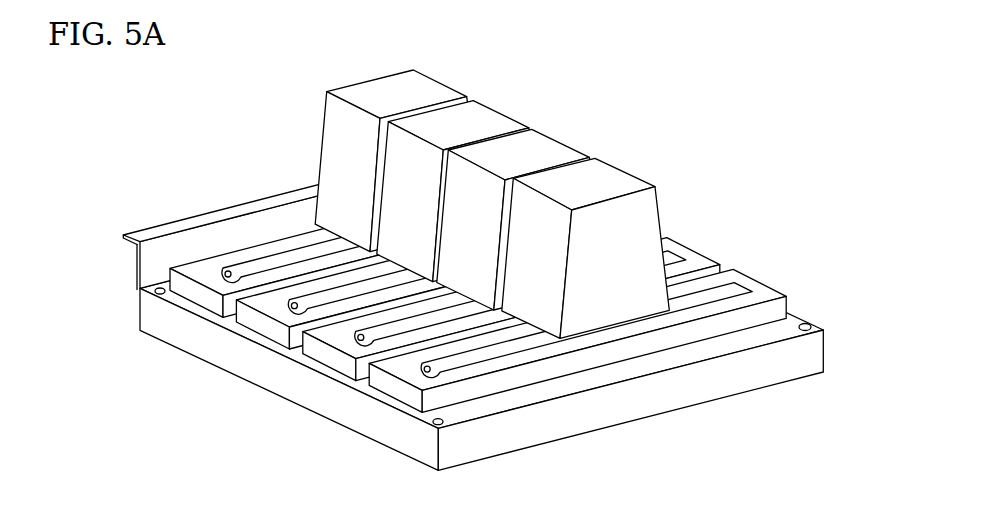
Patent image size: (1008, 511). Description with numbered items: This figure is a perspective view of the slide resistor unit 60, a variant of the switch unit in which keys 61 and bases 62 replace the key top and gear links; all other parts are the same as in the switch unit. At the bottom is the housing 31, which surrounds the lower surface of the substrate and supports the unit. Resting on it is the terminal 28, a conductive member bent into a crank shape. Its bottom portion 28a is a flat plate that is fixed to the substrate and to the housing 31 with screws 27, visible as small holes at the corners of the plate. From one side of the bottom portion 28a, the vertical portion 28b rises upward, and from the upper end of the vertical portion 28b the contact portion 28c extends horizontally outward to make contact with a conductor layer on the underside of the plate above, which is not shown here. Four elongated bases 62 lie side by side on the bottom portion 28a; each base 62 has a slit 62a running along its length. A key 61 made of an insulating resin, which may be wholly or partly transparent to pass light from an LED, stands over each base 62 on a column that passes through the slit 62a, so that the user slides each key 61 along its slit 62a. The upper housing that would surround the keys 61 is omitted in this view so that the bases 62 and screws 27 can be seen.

The screw 27 is at (160, 293).
The terminal 28 is at (479, 310).
The bottom portion 28a is at (606, 378).
The vertical portion 28b is at (139, 263).
The contact portion 28c is at (196, 222).
The housing 31 is at (825, 357).
The slide resistor unit 60 is at (724, 185).
The key 61 is at (449, 89).
The base 62 is at (189, 295).
The slit 62a is at (229, 276).